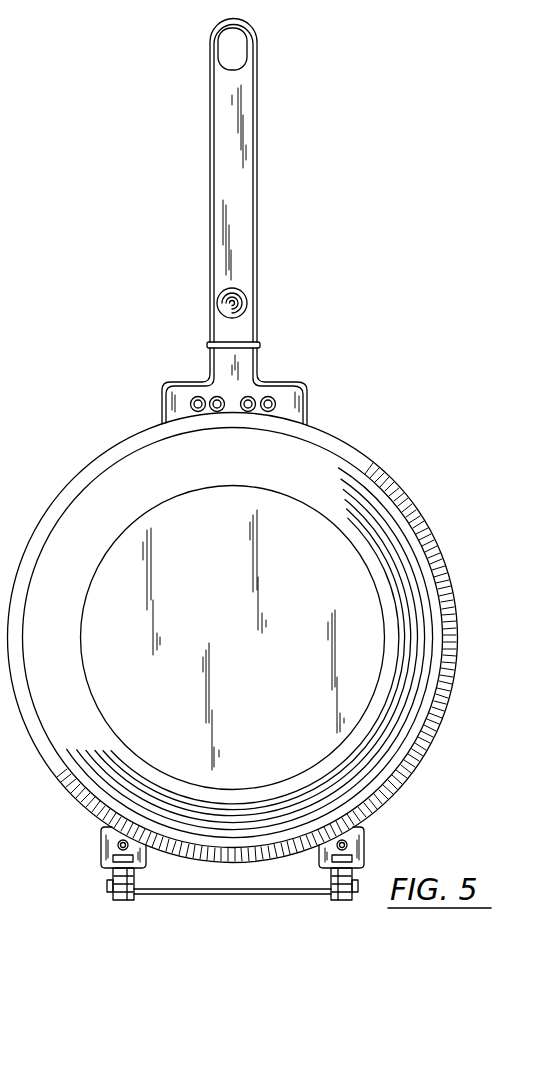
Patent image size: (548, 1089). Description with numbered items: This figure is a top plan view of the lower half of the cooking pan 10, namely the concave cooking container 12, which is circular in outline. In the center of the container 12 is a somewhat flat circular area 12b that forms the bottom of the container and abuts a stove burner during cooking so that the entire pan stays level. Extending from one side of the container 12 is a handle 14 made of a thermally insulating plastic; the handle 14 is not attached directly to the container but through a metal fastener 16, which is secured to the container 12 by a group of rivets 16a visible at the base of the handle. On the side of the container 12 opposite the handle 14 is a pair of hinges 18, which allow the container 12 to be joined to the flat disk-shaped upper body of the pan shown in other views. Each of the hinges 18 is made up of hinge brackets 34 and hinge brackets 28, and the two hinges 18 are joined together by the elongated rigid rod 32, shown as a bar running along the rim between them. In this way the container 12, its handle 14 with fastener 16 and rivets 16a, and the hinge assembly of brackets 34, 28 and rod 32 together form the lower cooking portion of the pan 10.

The cooking pan 10 is at (256, 604).
The concave cooking container 12 is at (378, 459).
The flat circular area 12b is at (342, 572).
The handle 14 is at (257, 110).
The metal fastener 16 is at (232, 373).
The rivets 16a is at (269, 401).
The hinges 18 is at (99, 843).
The hinge brackets 28 is at (138, 891).
The rod 32 is at (224, 897).
The hinge brackets 34 is at (110, 878).